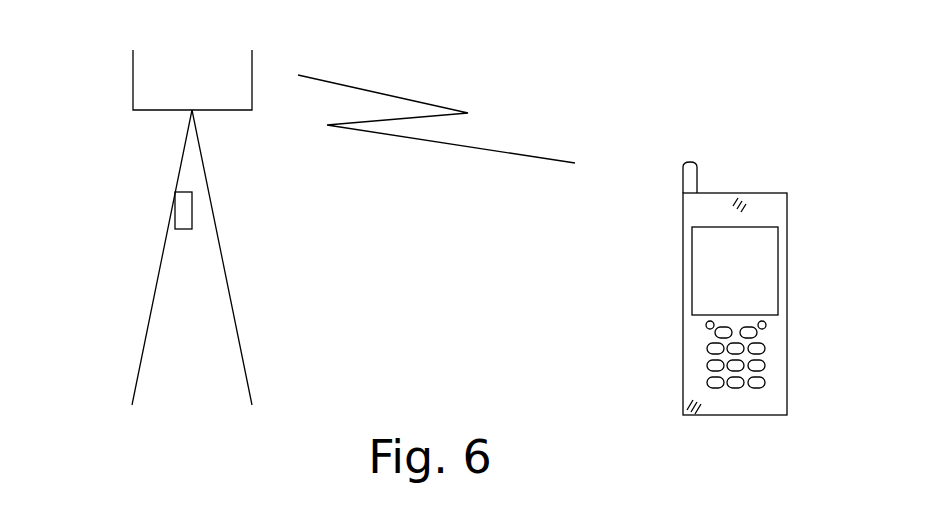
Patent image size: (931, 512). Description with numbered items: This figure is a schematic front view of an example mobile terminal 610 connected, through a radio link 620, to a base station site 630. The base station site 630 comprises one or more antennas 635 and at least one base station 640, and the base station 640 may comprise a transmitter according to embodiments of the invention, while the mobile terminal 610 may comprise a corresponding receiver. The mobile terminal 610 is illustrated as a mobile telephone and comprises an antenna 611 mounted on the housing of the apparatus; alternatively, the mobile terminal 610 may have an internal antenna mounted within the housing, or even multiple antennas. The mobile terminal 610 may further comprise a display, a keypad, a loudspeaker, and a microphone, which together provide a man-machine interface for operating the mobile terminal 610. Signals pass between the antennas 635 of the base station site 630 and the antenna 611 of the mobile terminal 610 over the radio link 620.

The mobile terminal 610 is at (767, 158).
The antenna 611 is at (685, 163).
The radio link 620 is at (458, 146).
The base station site 630 is at (157, 298).
The antenna 635 is at (133, 85).
The base station 640 is at (180, 205).